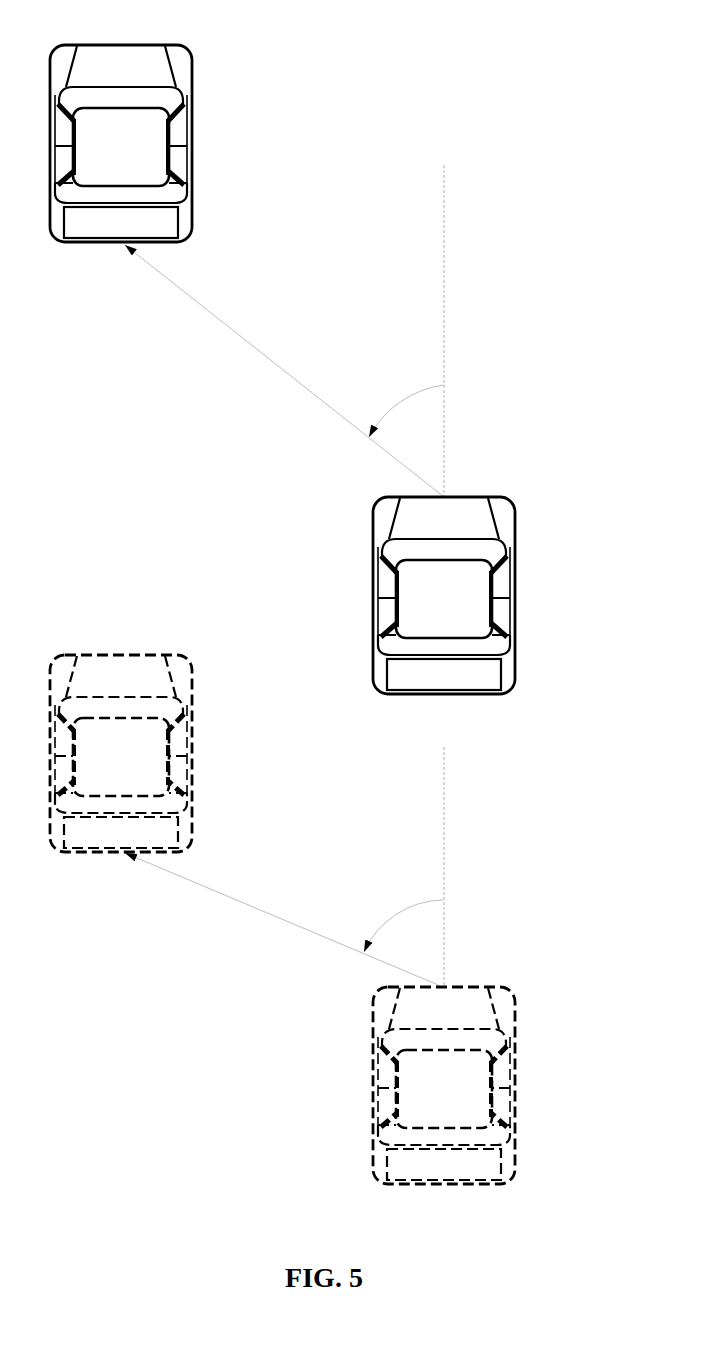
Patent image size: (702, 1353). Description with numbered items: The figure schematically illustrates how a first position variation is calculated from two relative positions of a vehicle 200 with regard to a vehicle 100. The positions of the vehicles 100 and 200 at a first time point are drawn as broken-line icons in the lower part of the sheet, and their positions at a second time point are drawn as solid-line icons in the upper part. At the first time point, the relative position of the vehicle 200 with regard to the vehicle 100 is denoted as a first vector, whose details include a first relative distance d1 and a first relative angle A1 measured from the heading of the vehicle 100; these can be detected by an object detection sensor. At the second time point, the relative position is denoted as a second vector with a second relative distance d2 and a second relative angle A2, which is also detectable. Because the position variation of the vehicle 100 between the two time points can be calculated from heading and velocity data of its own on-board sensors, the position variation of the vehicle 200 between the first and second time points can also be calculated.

The vehicle 100 is at (475, 497).
The vehicle 200 is at (189, 107).
The first relative distance d1 is at (284, 920).
The second relative distance d2 is at (284, 371).
The first relative angle A1 is at (403, 916).
The second relative angle A2 is at (406, 401).